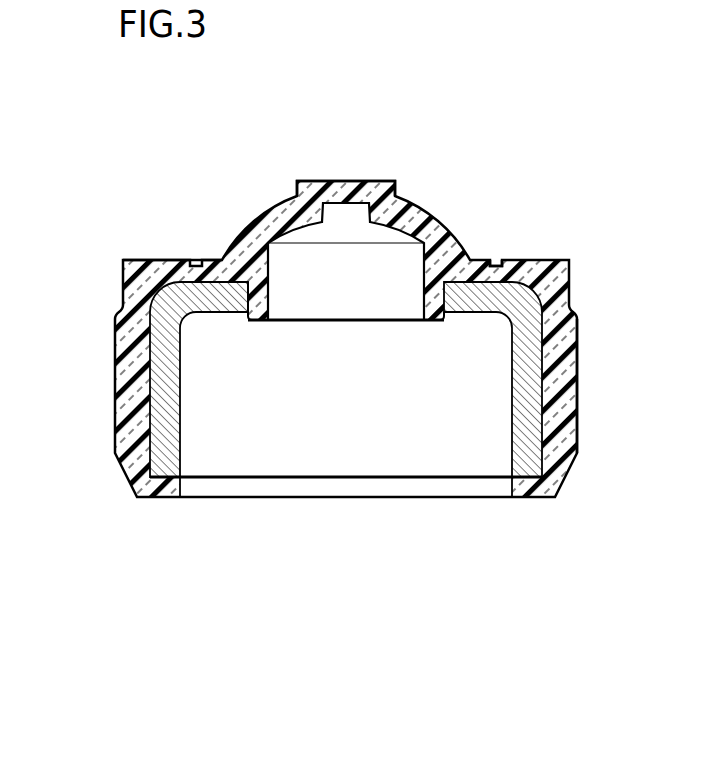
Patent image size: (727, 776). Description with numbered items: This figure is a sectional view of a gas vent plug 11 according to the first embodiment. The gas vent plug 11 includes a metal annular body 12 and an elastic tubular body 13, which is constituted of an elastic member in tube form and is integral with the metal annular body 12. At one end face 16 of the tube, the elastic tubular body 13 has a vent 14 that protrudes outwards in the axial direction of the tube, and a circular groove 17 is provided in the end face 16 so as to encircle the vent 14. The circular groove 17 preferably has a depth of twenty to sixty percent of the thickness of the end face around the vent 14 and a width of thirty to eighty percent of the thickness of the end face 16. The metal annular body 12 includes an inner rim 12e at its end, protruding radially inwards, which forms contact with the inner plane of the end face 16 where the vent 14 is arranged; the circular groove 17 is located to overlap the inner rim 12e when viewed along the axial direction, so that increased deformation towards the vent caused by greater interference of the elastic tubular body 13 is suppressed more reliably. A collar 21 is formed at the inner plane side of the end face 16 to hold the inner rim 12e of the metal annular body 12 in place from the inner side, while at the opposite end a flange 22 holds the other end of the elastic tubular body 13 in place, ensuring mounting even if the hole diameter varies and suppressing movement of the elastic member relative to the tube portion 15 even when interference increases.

The gas vent plug 11 is at (456, 160).
The metal annular body 12 is at (167, 417).
The inner rim 12e is at (215, 297).
The elastic tubular body 13 is at (118, 352).
The vent 14 is at (369, 181).
The tube portion 15 is at (582, 313).
The end face 16 is at (223, 247).
The circular groove 17 is at (498, 235).
The collar 21 is at (447, 317).
The flange 22 is at (531, 480).